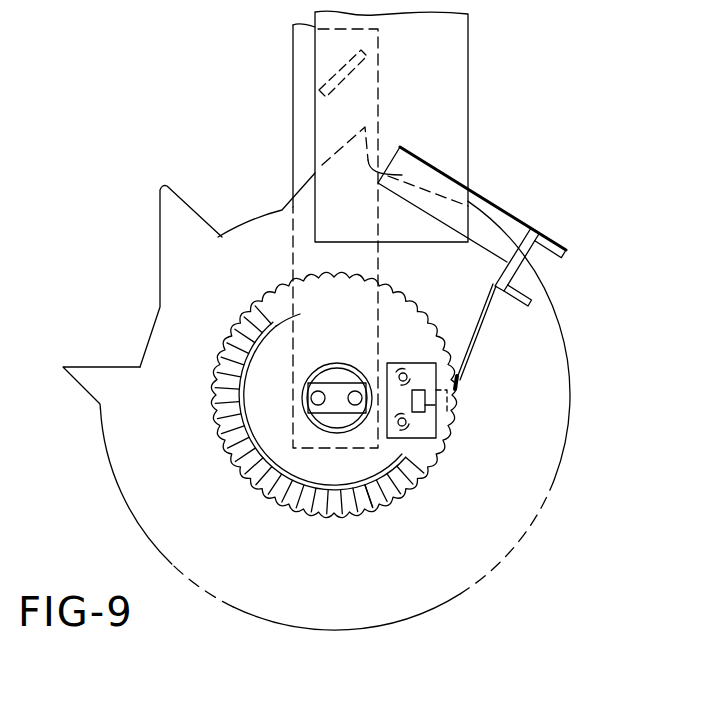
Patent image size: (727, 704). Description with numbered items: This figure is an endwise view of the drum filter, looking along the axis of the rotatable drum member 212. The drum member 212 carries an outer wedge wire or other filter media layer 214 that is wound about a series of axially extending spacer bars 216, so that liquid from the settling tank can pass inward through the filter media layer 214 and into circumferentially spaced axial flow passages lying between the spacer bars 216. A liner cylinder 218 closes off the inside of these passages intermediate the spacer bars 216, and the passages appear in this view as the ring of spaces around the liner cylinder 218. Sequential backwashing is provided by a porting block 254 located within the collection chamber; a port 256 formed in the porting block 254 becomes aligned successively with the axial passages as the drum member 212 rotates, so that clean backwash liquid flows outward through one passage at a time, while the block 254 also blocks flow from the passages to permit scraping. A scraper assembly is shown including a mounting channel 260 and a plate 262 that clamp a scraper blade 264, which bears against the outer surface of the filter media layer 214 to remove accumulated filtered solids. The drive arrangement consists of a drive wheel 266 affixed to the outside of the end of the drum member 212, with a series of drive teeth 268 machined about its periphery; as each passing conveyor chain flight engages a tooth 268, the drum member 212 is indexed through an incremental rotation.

The drum member 212 is at (253, 307).
The outer wedge wire filter media layer 214 is at (243, 470).
The spacer bars 216 is at (369, 503).
The liner cylinder 218 is at (243, 370).
The porting block 254 is at (423, 432).
The port 256 is at (426, 408).
The mounting channel 260 is at (556, 247).
The plate 262 is at (533, 232).
The scraper blade 264 is at (464, 352).
The drive wheel 266 is at (108, 463).
The drive teeth 268 is at (77, 366).